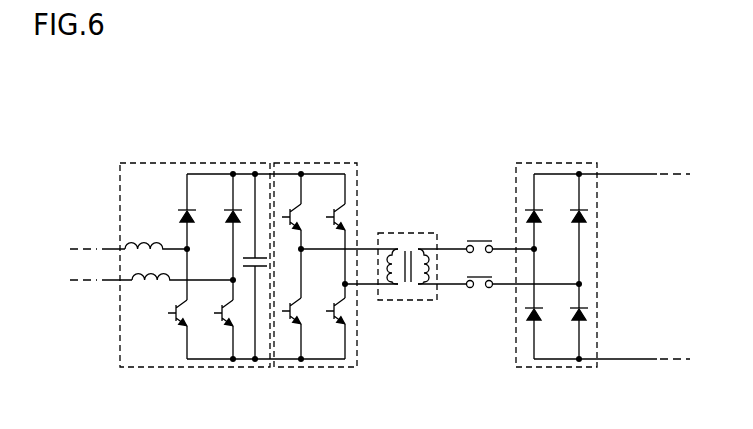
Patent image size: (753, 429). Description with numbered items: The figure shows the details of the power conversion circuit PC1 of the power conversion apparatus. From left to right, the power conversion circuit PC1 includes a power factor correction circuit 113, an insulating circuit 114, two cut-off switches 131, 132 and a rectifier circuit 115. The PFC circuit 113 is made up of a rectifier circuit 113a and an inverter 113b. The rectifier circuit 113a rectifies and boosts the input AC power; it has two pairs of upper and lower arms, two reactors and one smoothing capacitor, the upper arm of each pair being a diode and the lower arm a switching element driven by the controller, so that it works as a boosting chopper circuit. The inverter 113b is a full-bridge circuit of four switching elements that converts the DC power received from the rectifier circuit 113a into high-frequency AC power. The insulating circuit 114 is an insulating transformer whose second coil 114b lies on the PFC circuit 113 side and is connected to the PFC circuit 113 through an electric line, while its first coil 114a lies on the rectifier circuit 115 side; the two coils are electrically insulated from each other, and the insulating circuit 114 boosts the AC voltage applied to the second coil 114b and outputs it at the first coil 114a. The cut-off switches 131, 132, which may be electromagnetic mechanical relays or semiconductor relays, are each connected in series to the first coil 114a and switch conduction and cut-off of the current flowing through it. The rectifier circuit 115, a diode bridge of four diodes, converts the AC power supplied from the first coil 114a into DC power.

The power factor correction (PFC) circuit 113 is at (360, 103).
The rectifier circuit 113a is at (205, 163).
The inverter 113b is at (316, 163).
The insulating circuit 114 is at (407, 233).
The first coil 114a is at (427, 300).
The second coil 114b is at (383, 300).
The rectifier circuit 115 is at (558, 163).
The cut-off switch 131 is at (481, 241).
The cut-off switch 132 is at (480, 290).
The power conversion circuit PC1 is at (588, 87).